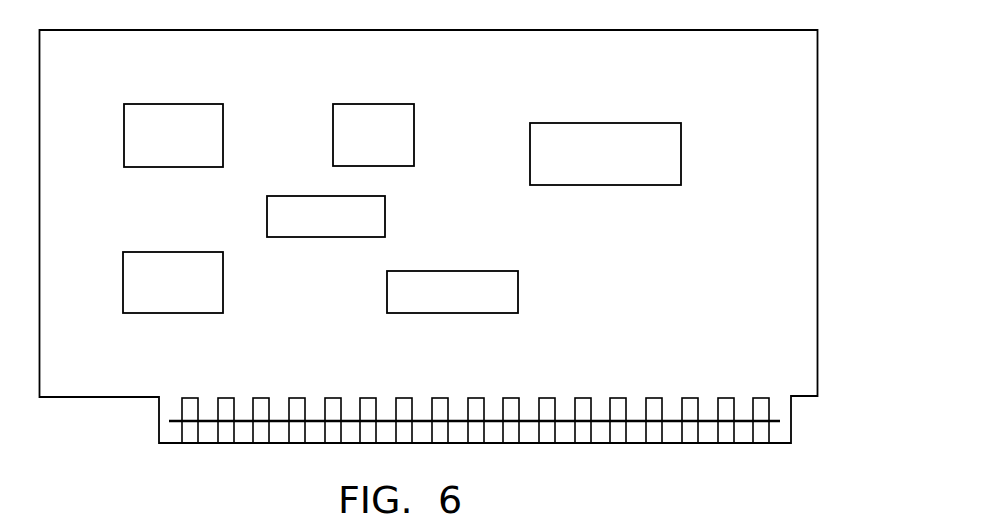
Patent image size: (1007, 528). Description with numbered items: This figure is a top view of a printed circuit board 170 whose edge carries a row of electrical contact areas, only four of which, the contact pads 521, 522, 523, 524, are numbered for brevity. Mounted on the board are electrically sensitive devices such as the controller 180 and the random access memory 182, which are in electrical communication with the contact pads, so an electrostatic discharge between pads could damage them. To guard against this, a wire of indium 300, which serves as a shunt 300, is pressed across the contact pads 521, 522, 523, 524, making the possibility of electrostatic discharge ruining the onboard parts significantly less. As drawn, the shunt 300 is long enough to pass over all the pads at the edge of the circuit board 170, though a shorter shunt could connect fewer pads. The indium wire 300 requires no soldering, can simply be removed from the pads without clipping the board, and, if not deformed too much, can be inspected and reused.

The printed circuit board 170 is at (799, 252).
The controller 180 is at (653, 133).
The random access memory 182 is at (486, 282).
The wire of indium 300 is at (775, 424).
The electrical contact pad 521 is at (190, 397).
The electrical contact pad 522 is at (226, 397).
The electrical contact pad 523 is at (261, 397).
The electrical contact pad 524 is at (297, 397).